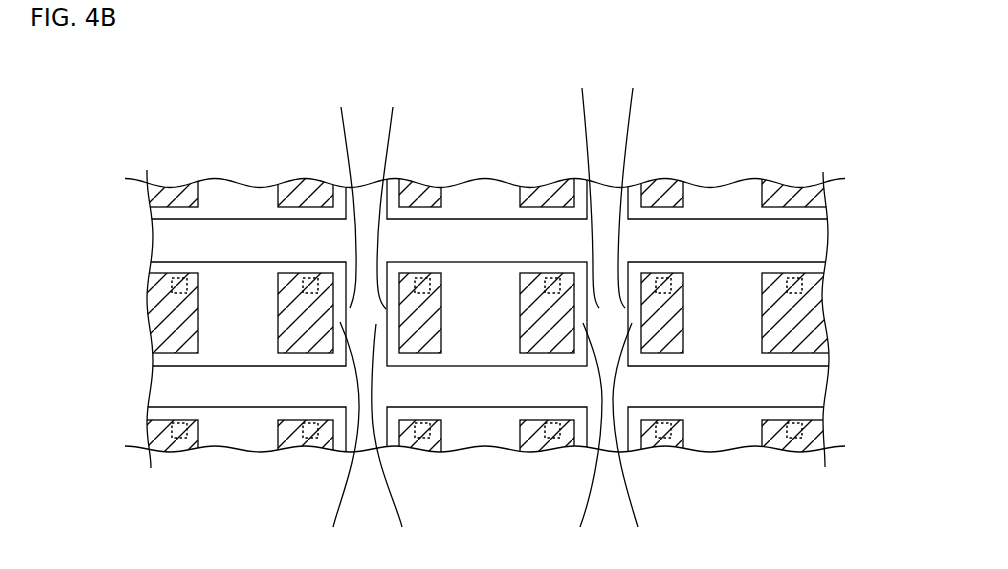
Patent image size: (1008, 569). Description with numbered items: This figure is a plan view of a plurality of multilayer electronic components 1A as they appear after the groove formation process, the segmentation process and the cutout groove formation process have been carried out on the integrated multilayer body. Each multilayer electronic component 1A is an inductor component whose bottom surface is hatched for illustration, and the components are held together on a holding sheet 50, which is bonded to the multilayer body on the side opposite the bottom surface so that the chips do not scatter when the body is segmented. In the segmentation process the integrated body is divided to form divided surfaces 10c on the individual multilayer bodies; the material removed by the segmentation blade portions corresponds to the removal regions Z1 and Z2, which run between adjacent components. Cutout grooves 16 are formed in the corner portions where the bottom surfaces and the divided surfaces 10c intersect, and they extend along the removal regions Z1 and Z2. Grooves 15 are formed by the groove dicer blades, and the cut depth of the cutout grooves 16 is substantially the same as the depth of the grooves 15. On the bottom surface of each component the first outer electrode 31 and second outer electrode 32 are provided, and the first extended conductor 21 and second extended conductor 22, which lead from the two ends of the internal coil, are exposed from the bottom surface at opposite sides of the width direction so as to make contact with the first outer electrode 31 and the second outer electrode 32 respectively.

The multilayer electronic component 1A is at (553, 180).
The divided surface 10c is at (238, 506).
The groove 15 is at (200, 283).
The cutout groove 16 is at (288, 270).
The first extended conductor 21 is at (311, 278).
The second extended conductor 22 is at (176, 284).
The first outer electrode 31 is at (829, 283).
The second outer electrode 32 is at (162, 322).
The holding sheet 50 is at (160, 384).
The removal region Z1 is at (364, 465).
The removal region Z2 is at (840, 240).